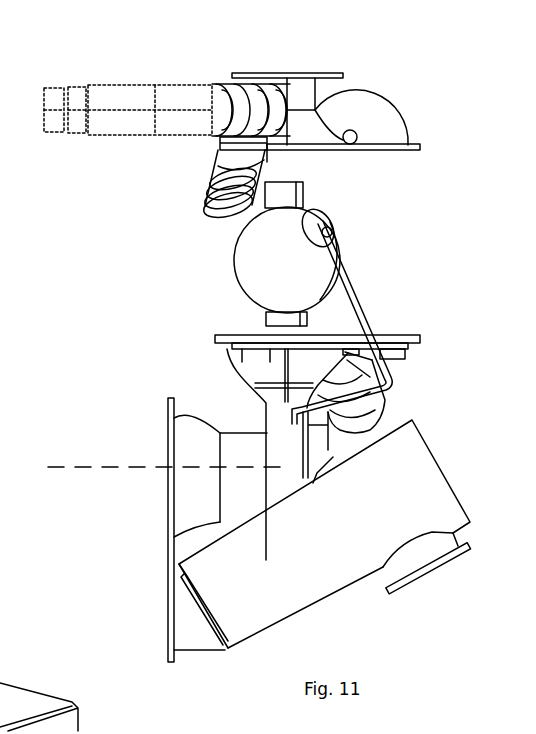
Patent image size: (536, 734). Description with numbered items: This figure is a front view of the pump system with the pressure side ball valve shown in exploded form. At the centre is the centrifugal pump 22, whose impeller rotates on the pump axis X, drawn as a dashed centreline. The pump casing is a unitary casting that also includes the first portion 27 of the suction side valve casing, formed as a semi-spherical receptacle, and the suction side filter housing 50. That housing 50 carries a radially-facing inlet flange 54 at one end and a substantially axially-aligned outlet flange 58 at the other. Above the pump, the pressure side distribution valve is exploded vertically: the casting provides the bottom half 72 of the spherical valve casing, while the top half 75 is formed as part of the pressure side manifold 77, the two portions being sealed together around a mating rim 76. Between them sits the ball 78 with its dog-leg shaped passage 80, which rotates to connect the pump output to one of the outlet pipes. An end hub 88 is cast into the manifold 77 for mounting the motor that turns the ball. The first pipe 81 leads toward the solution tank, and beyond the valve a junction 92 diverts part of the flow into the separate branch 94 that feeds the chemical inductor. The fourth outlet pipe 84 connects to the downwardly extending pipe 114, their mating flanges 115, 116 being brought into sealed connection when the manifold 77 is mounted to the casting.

The centrifugal pump 22 is at (280, 452).
The first portion of spherical casing 27 is at (185, 433).
The suction side filter housing 50 is at (346, 582).
The inlet flange 54 is at (459, 547).
The outlet flange 58 is at (197, 640).
The bottom half of spherical valve casing 72 is at (238, 362).
The top half of pressure side valve casing 75 is at (335, 150).
The mating rim 76 is at (228, 336).
The pressure side manifold 77 is at (366, 64).
The ball 78 is at (344, 258).
The dog-leg shaped passage 80 is at (332, 231).
The first pipe 81 is at (232, 95).
The fourth outlet pipe 84 is at (396, 110).
The end hub 88 is at (313, 72).
The junction 92 is at (262, 133).
The branch 94 is at (212, 187).
The downwardly extending pipe 114 is at (400, 397).
The mating flange 115 is at (498, 151).
The mating flange 116 is at (412, 346).
The pump axis X is at (83, 466).